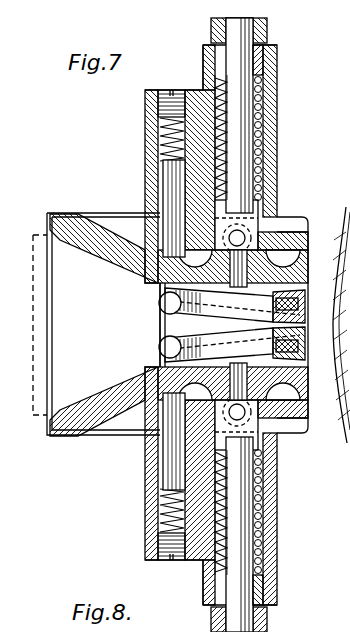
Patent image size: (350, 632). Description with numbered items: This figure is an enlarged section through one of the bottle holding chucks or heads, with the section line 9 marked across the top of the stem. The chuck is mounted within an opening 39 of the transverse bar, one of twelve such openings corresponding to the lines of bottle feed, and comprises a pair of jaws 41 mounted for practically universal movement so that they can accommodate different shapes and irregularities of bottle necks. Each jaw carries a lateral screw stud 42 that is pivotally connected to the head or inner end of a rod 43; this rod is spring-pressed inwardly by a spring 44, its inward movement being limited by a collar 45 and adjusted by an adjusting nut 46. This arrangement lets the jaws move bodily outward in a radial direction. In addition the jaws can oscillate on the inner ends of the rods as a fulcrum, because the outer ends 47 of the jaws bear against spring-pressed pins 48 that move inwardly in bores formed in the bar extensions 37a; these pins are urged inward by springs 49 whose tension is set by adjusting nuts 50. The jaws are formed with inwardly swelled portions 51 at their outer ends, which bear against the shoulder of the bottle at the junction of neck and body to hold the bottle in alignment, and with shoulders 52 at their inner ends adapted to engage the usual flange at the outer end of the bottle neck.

The section line 9— 9 is at (250, 18).
The bar extension 37a is at (150, 200).
The opening 39 is at (47, 287).
The jaw 41 is at (231, 325).
The lateral screw stud 42 is at (285, 222).
The rod 43 is at (250, 157).
The spring 44 is at (262, 108).
The collar 45 is at (211, 32).
The adjusting nut 46 is at (277, 60).
The outer end of jaw 47 is at (162, 293).
The spring-pressed pin 48 is at (168, 230).
The spring 49 is at (160, 148).
The adjusting nut 50 is at (170, 92).
The inwardly swelled portion 51 is at (160, 318).
The shoulder 52 is at (290, 338).